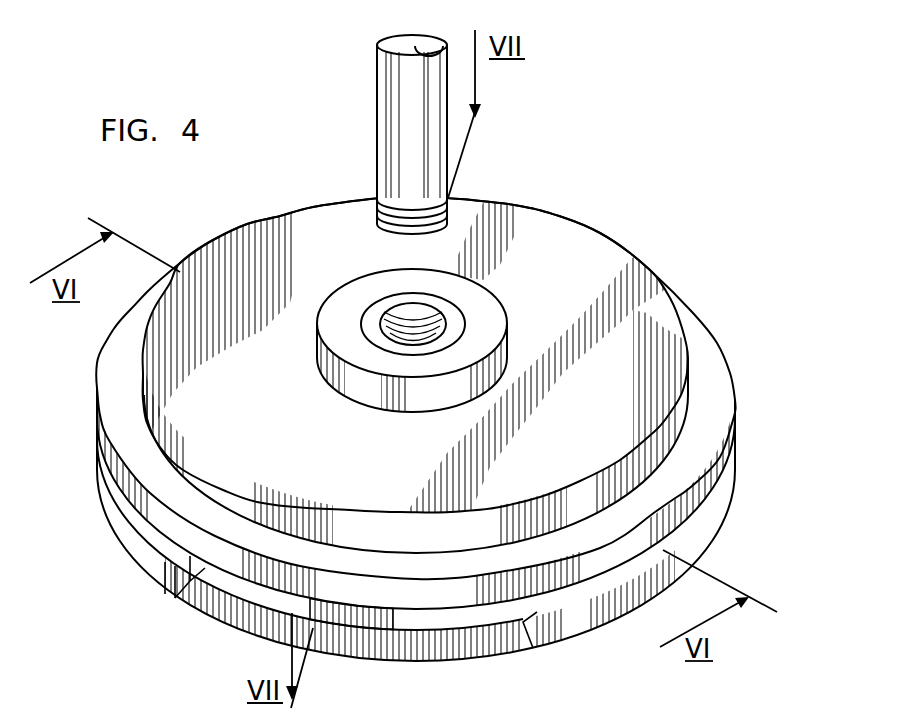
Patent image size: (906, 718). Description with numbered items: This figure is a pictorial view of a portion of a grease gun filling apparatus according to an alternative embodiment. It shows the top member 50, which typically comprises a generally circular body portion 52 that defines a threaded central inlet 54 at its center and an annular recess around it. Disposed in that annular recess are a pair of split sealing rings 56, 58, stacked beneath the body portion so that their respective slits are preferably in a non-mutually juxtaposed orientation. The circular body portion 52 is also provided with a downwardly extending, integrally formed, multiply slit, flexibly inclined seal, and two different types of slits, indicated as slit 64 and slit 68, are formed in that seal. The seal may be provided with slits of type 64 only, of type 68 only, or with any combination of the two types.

The top member 50 is at (392, 361).
The circular body portion 52 is at (623, 213).
The threaded central inlet 54 is at (330, 193).
The split sealing ring 56 is at (118, 383).
The split sealing ring 58 is at (143, 523).
The slit 64 is at (530, 630).
The slit 68 is at (172, 586).